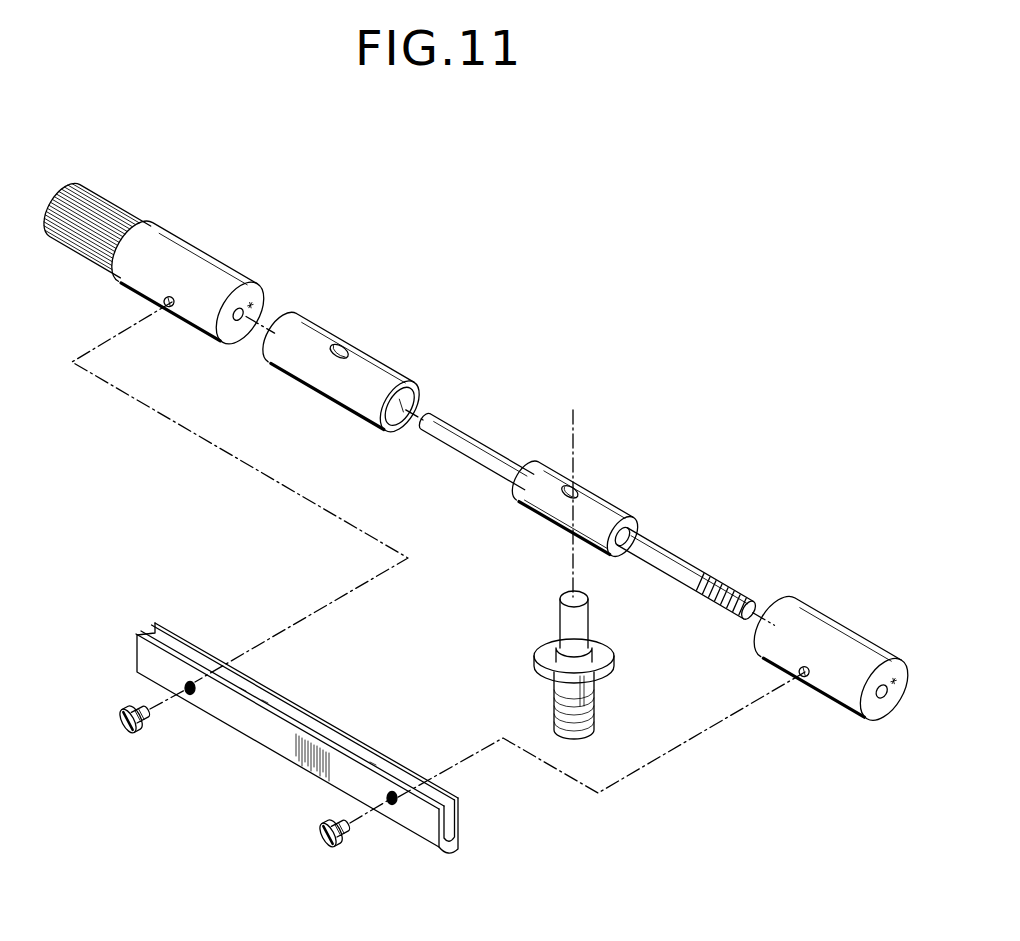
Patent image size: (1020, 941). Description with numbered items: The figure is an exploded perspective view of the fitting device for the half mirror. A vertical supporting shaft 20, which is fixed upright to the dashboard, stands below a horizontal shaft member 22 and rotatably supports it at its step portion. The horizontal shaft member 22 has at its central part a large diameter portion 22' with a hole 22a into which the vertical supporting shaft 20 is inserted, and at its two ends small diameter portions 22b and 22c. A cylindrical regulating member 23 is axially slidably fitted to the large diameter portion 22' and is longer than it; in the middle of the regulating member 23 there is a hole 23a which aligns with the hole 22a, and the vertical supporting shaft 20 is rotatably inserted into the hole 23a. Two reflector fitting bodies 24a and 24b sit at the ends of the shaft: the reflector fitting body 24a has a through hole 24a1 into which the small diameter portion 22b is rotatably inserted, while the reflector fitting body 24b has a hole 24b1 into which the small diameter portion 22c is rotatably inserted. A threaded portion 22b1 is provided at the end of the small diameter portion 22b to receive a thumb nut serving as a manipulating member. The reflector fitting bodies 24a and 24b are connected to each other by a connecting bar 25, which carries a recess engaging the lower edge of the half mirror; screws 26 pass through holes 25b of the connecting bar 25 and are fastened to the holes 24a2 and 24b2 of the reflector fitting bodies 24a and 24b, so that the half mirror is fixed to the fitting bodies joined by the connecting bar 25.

The vertical supporting shaft 20 is at (567, 628).
The horizontal shaft member 22 is at (587, 468).
The large diameter portion 22' is at (599, 432).
The hole 22a is at (552, 505).
The small diameter portion 22b is at (660, 547).
The threaded portion 22b1 is at (732, 583).
The small diameter portion 22c is at (492, 447).
The cylindrical regulating member 23 is at (377, 373).
The hole 23a is at (345, 345).
The reflector fitting body 24a is at (817, 623).
The through hole 24a1 is at (882, 700).
The hole 24a2 is at (805, 682).
The reflector fitting body 24b is at (177, 247).
The hole 24b1 is at (246, 312).
The hole 24b2 is at (174, 299).
The connecting bar 25 is at (274, 742).
The holes 25b is at (137, 658).
The screws 26 is at (330, 848).